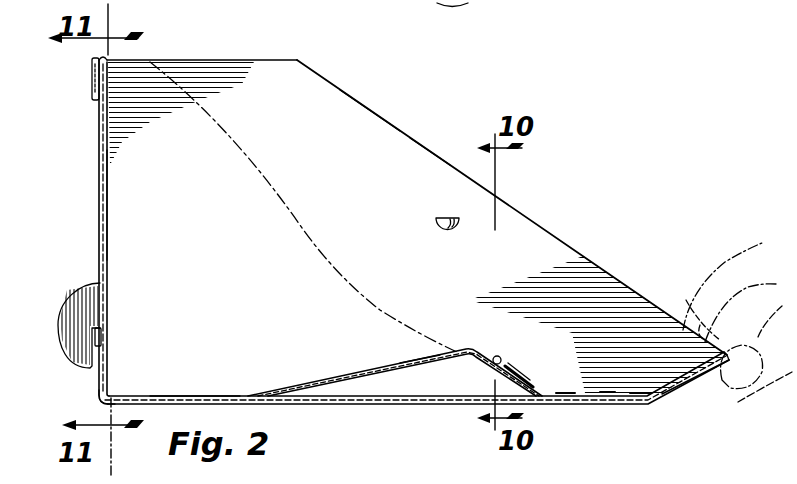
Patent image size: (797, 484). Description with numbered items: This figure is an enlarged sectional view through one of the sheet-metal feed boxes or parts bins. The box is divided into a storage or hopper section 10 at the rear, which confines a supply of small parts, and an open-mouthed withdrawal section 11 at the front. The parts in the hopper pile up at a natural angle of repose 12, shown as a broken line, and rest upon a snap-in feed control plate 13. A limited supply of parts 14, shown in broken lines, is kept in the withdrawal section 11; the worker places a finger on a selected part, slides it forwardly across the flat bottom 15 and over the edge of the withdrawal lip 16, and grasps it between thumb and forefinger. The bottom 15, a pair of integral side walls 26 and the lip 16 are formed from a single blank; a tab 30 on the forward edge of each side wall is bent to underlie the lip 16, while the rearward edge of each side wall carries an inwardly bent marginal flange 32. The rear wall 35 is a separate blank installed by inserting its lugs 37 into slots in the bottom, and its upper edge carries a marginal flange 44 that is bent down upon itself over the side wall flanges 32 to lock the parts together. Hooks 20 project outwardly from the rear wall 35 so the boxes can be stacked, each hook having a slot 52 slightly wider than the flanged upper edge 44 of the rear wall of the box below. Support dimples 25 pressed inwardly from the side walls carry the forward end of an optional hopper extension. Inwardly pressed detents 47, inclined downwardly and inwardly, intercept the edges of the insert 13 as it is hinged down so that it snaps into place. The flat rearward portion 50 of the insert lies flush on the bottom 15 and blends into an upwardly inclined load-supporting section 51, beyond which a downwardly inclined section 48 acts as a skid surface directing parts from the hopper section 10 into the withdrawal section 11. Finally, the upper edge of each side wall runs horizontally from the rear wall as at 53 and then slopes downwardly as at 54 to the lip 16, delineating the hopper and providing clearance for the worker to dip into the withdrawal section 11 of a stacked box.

The storage section 10 is at (171, 94).
The withdrawal section 11 is at (634, 279).
The angle of repose 12 is at (322, 238).
The feed control plate 13 is at (381, 388).
The parts 14 is at (565, 392).
The bottom 15 is at (592, 404).
The withdrawal lip 16 is at (698, 378).
The hooks 20 is at (68, 318).
The support dimples 25 is at (446, 217).
The side walls 26 is at (345, 122).
The tab 30 is at (735, 364).
The marginal flange 32 is at (99, 172).
The rear wall 35 is at (108, 208).
The lugs 37 is at (118, 408).
The marginal flange 44 is at (92, 78).
The detents 47 is at (497, 357).
The downwardly inclined section 48 is at (512, 371).
The flat rearward portion 50 is at (197, 396).
The load-supporting section 51 is at (400, 370).
The slot 52 is at (103, 348).
The horizontal upper edge 53 is at (255, 60).
The sloping edge 54 is at (441, 150).